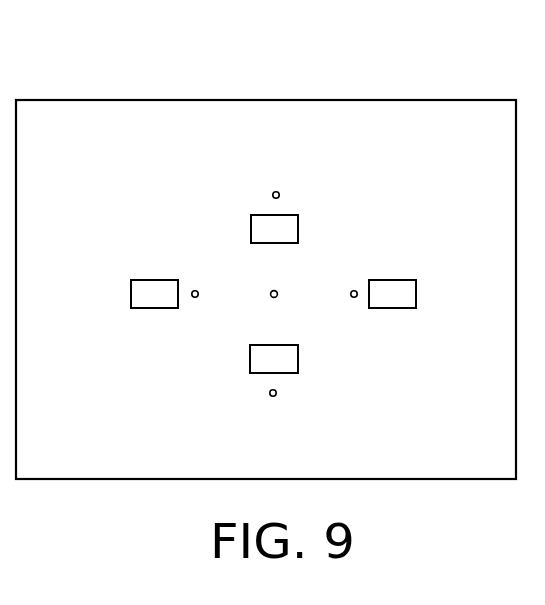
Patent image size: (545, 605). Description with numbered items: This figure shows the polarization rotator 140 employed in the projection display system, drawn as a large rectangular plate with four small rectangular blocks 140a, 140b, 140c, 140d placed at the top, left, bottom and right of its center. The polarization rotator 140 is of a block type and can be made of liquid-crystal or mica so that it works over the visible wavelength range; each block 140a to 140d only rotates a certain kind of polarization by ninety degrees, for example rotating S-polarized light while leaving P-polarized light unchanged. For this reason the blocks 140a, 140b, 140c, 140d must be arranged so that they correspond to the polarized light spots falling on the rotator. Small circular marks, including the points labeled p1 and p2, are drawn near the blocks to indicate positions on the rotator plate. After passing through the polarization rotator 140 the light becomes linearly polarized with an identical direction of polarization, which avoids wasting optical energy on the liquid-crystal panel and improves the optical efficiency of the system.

The polarization rotator 140 is at (440, 101).
The block of the polarization rotator 140a is at (263, 225).
The block of the polarization rotator 140b is at (142, 297).
The block of the polarization rotator 140c is at (262, 362).
The block of the polarization rotator 140d is at (393, 294).
The first reference point p1 is at (276, 397).
The second reference point p2 is at (280, 193).